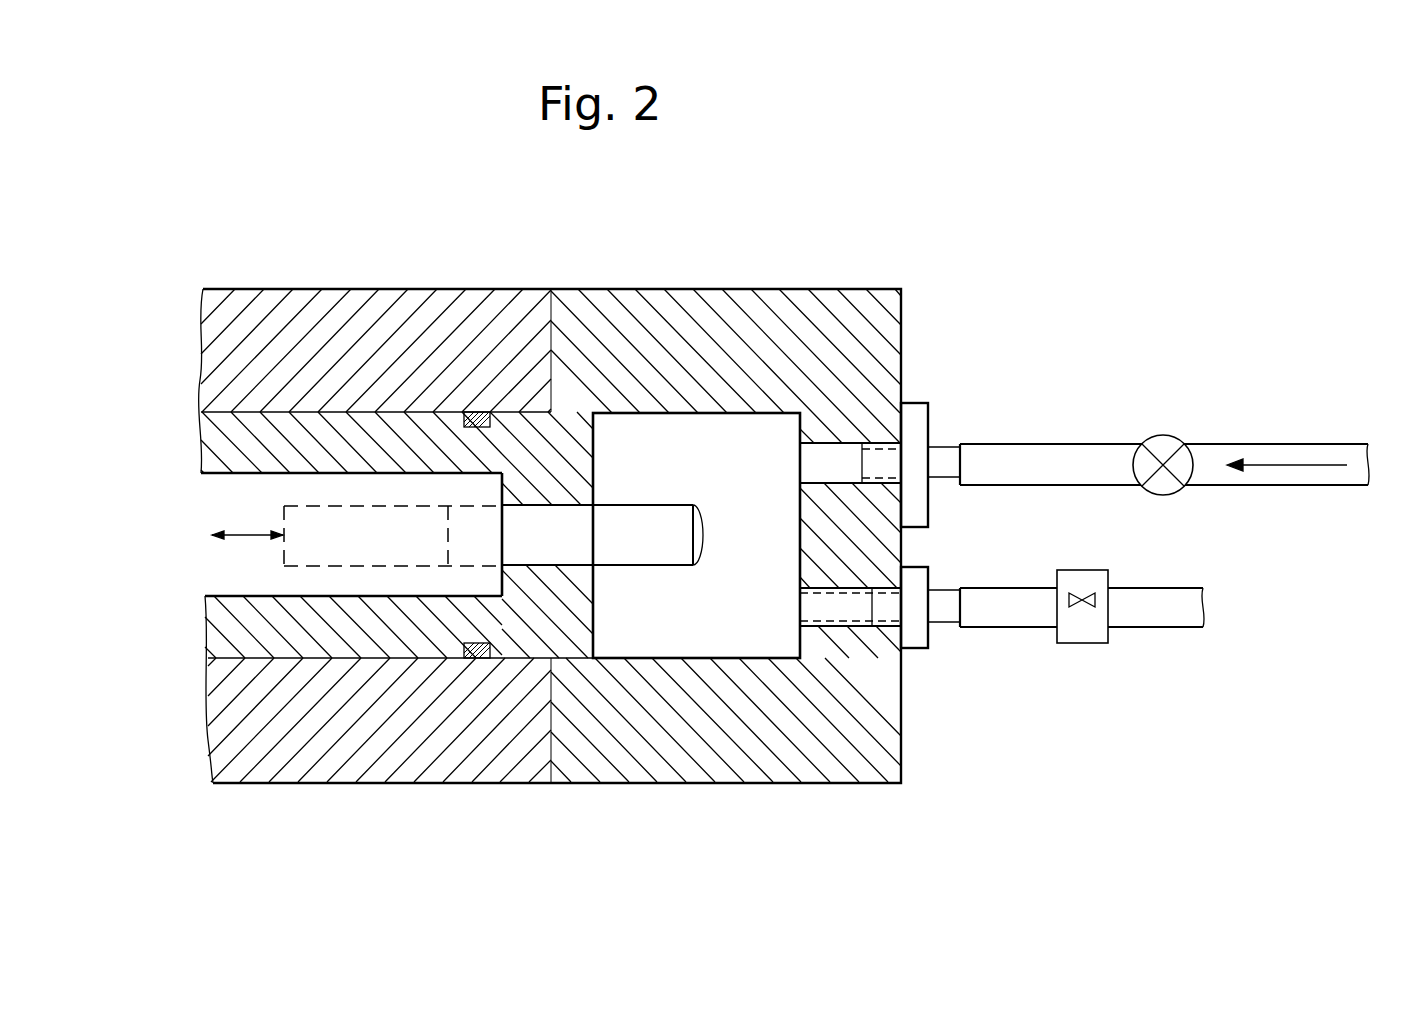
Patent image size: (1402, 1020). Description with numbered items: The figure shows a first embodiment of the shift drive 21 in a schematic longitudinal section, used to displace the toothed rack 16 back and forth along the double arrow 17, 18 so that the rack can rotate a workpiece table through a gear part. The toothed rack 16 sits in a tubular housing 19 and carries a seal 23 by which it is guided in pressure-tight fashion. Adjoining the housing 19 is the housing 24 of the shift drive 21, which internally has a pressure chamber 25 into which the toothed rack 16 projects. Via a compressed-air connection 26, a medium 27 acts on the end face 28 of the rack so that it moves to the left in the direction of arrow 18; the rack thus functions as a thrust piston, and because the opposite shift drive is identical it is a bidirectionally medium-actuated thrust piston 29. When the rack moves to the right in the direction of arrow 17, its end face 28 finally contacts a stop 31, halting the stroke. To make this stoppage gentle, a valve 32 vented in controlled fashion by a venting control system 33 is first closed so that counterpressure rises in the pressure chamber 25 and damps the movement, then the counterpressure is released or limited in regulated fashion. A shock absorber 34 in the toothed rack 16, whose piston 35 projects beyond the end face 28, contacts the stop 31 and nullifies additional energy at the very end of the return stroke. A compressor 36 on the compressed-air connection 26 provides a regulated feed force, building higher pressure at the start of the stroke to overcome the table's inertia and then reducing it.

The toothed rack 16 is at (250, 635).
The arrow 17 is at (277, 537).
The arrow 18 is at (210, 540).
The housing 19 is at (307, 290).
The shift drive 21 is at (592, 260).
The seal 23 is at (490, 658).
The housing of shift drive 24 is at (823, 300).
The pressure chamber 25 is at (720, 599).
The compressed-air connection 26 is at (916, 418).
The medium 27 is at (1296, 465).
The end face 28 is at (597, 623).
The thrust piston 29 is at (335, 645).
The stop 31 is at (798, 540).
The valve 32 is at (930, 633).
The venting control system 33 is at (1100, 643).
The shock absorber 34 is at (423, 580).
The piston 35 is at (655, 549).
The compressor 36 is at (1155, 435).